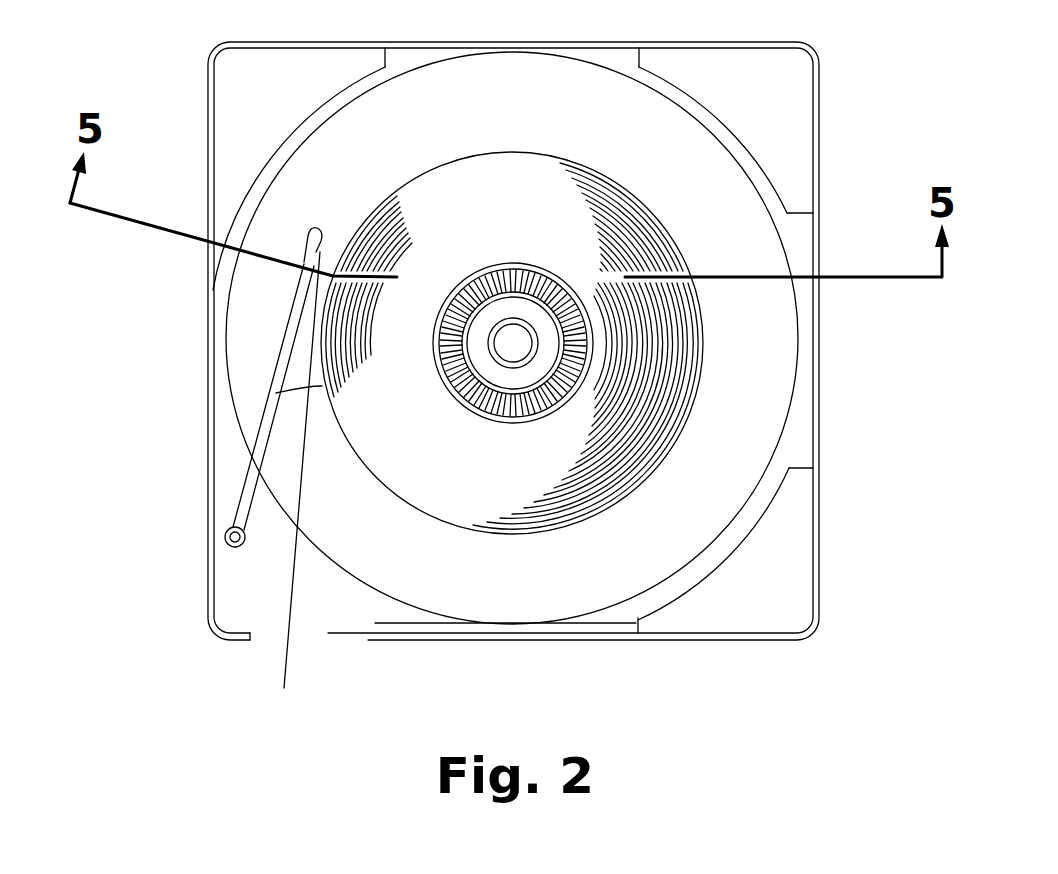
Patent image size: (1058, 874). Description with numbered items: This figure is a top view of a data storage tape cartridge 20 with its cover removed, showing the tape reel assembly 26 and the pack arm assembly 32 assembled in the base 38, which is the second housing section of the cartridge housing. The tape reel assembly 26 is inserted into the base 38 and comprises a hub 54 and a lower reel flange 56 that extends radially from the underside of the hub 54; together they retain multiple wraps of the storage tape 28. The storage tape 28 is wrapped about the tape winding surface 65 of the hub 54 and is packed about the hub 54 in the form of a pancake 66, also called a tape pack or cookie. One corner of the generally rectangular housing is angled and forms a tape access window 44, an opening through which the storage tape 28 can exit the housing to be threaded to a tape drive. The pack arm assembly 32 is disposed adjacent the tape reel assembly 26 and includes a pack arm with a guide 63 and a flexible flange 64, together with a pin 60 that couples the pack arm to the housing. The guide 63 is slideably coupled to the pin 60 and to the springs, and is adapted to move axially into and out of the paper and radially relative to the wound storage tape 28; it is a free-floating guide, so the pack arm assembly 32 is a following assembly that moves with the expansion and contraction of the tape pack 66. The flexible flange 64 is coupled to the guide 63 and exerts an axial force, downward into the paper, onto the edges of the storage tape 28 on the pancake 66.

The data storage tape cartridge 20 is at (186, 62).
The tape reel assembly 26 is at (300, 181).
The storage tape 28 is at (287, 659).
The pack arm assembly 32 is at (245, 381).
The second housing section 38 is at (820, 147).
The tape access window 44 is at (259, 652).
The hub 54 is at (592, 336).
The reel flange 56 is at (760, 420).
The pin 60 is at (223, 537).
The guide 63 is at (306, 242).
The flexible flange 64 is at (305, 342).
The tape winding surface 65 is at (588, 381).
The pancake 66 is at (655, 238).